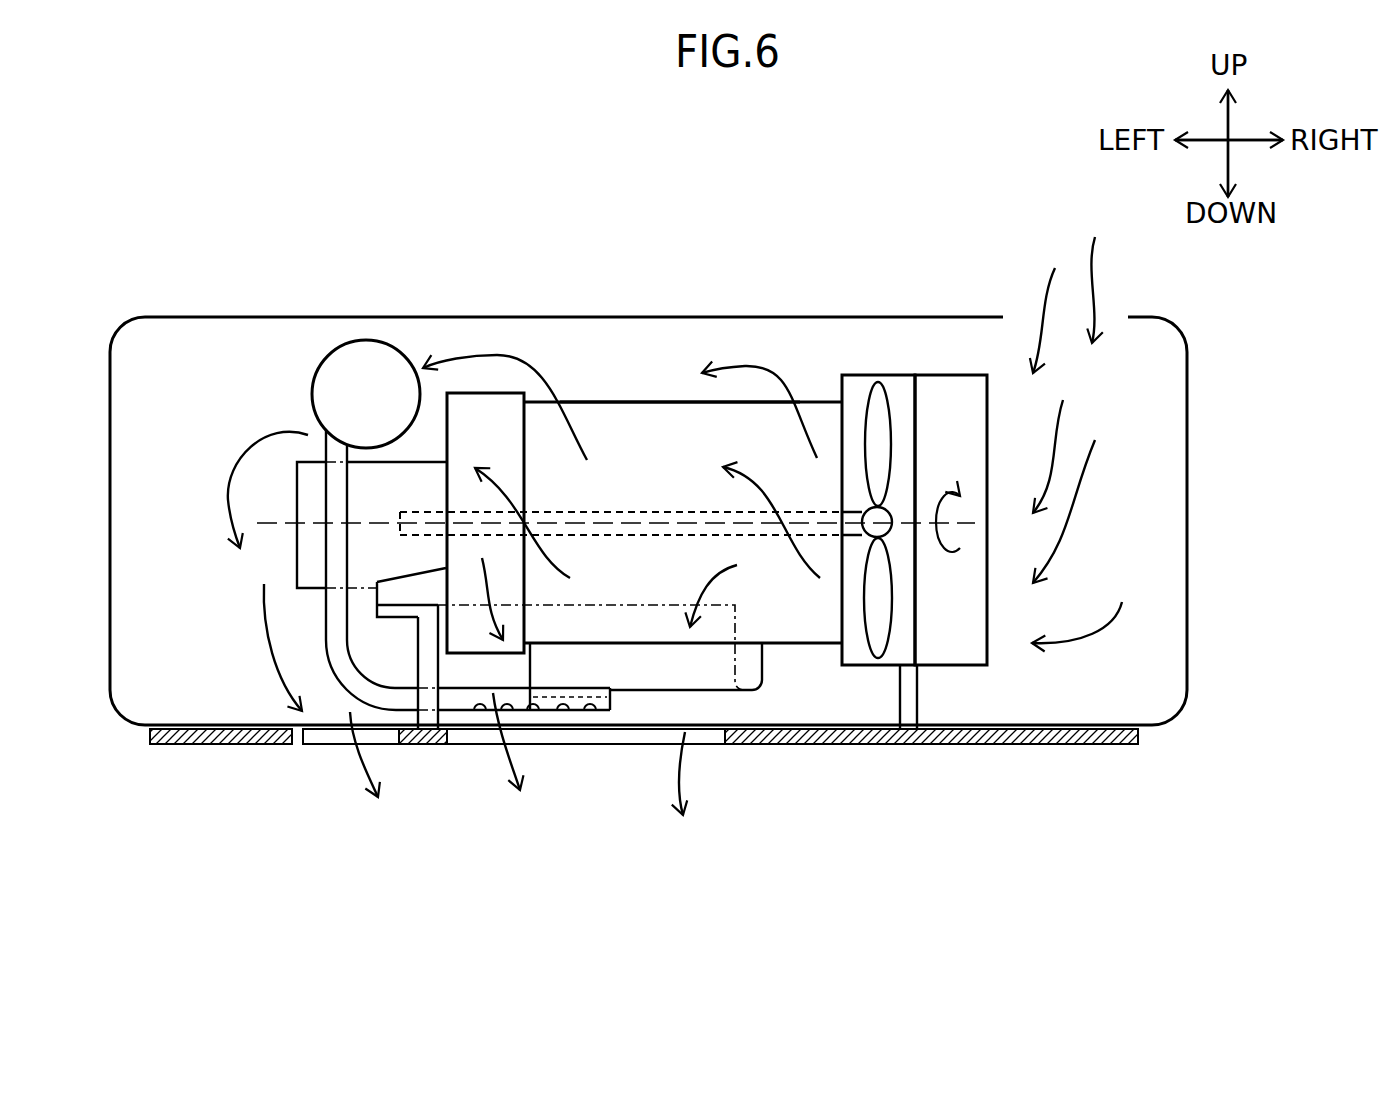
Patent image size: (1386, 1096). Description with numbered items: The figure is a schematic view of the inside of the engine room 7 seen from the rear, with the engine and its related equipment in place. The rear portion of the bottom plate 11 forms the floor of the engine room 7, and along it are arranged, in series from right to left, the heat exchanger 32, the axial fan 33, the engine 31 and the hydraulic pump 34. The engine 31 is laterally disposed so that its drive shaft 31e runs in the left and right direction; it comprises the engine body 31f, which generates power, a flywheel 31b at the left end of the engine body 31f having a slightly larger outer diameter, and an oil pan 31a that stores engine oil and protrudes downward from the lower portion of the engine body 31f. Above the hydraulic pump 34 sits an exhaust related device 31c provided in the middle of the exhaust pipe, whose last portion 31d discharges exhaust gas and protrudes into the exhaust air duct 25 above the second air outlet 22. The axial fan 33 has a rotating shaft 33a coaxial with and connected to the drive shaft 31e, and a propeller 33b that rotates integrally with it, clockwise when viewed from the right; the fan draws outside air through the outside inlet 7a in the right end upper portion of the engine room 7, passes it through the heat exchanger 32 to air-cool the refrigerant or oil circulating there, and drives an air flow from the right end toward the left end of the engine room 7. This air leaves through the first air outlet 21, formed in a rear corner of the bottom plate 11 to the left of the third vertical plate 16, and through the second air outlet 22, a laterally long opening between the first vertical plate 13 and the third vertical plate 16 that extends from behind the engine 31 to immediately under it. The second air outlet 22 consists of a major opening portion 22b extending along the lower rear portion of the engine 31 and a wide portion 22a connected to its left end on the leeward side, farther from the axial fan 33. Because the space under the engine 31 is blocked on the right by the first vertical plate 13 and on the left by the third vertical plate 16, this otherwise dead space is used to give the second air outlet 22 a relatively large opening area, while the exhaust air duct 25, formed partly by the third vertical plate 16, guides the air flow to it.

The engine room 7 is at (245, 358).
The outside inlet 7a is at (1112, 305).
The bottom plate 11 is at (222, 747).
The first vertical plate 13 is at (917, 700).
The third vertical plate 16 is at (417, 665).
The first air outlet 21 is at (305, 747).
The second air outlet 22 is at (584, 805).
The wide portion 22a is at (468, 740).
The major opening portion 22b is at (637, 733).
The exhaust air duct 25 is at (752, 698).
The engine 31 is at (657, 399).
The oil pan 31a is at (762, 667).
The flywheel 31b is at (485, 415).
The exhaust related device 31c is at (368, 350).
The last portion 31d is at (557, 712).
The drive shaft 31e is at (633, 510).
The engine body 31f is at (677, 415).
The heat exchanger 32 is at (953, 390).
The axial fan 33 is at (835, 434).
The rotating shaft 33a is at (842, 400).
The propeller 33b is at (903, 440).
The hydraulic pump 34 is at (307, 567).